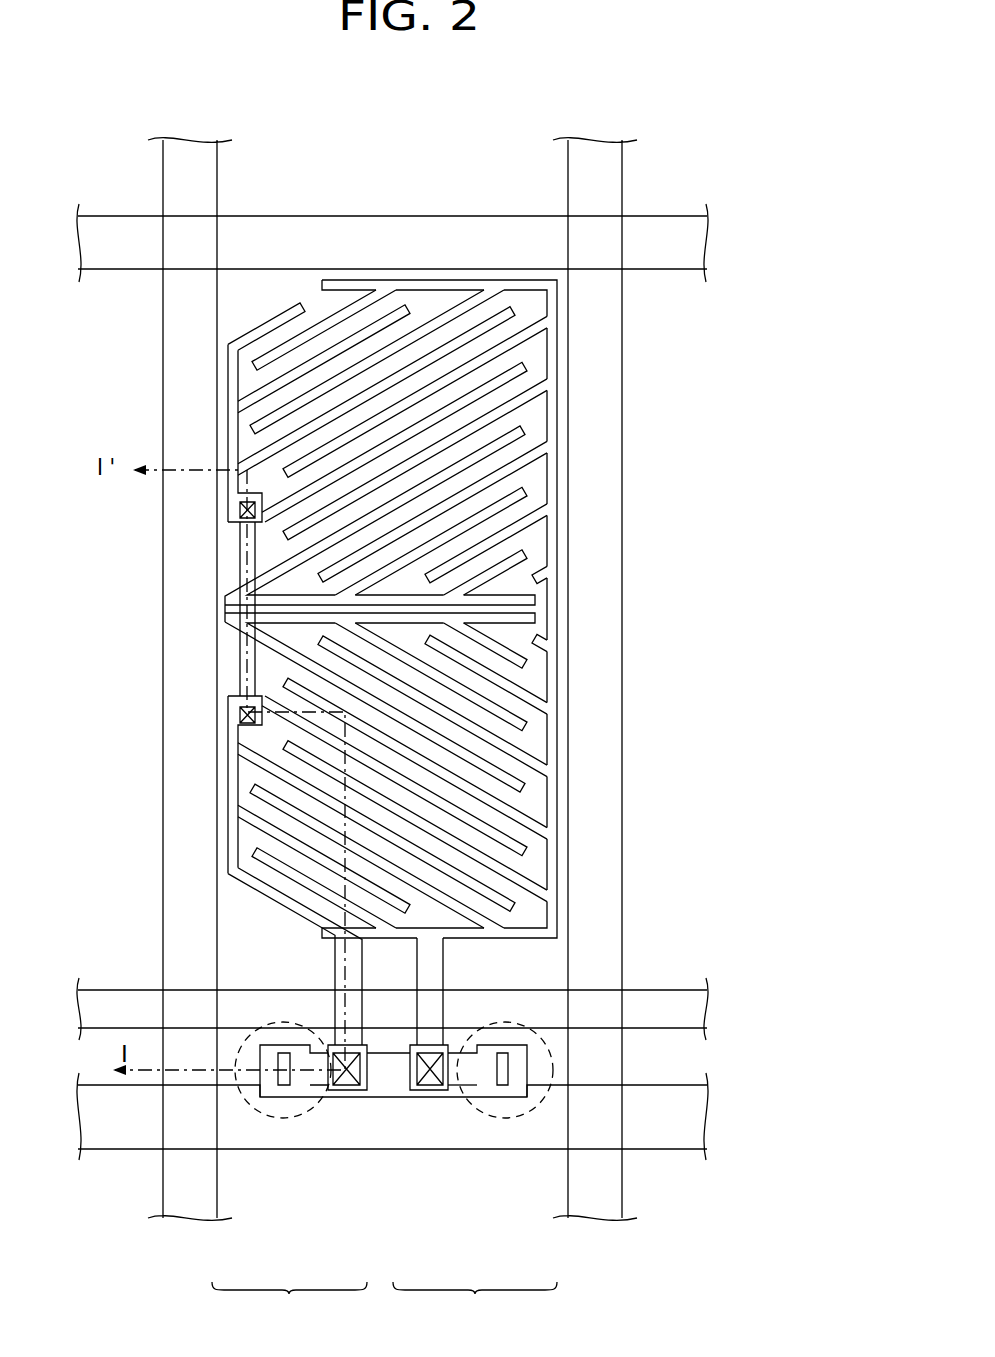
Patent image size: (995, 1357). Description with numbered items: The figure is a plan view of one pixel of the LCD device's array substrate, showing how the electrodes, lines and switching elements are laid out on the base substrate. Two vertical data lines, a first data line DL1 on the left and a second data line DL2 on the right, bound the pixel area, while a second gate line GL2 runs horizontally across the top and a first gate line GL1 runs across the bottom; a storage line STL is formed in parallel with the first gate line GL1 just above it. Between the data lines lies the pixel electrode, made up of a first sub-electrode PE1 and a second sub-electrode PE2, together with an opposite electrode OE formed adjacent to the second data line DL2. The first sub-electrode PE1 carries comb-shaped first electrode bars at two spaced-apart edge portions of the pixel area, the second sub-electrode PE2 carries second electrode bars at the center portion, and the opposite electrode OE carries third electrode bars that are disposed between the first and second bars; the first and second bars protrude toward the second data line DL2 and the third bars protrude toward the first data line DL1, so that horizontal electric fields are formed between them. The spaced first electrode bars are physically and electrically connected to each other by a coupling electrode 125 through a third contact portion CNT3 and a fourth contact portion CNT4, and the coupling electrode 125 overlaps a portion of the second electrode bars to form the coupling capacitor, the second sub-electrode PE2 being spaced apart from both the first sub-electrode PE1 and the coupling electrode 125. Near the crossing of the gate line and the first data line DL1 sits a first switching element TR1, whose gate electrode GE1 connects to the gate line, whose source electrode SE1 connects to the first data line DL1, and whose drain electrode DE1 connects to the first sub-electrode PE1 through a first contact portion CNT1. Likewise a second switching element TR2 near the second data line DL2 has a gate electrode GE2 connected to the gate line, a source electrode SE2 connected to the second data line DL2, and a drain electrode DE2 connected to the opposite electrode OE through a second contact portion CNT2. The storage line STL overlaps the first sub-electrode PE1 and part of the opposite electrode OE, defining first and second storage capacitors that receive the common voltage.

The second gate line GL2 is at (655, 232).
The first gate line GL1 is at (655, 1128).
The first data line DL1 is at (182, 802).
The second data line DL2 is at (613, 815).
The storage line STL is at (655, 982).
The opposite electrode OE is at (557, 770).
The first sub-electrode PE1 is at (232, 880).
The second sub-electrode PE2 is at (225, 613).
The coupling electrode 125 is at (243, 552).
The first contact portion CNT1 is at (347, 1092).
The second contact portion CNT2 is at (426, 1092).
The third contact portion CNT3 is at (240, 708).
The fourth contact portion CNT4 is at (240, 510).
The first switching element TR1 is at (311, 1173).
The second switching element TR2 is at (475, 1173).
The source electrode SE1 is at (250, 1078).
The gate electrode GE1 is at (287, 1092).
The drain electrode DE1 is at (320, 1082).
The source electrode SE2 is at (540, 1080).
The gate electrode GE2 is at (500, 1092).
The drain electrode DE2 is at (448, 1082).